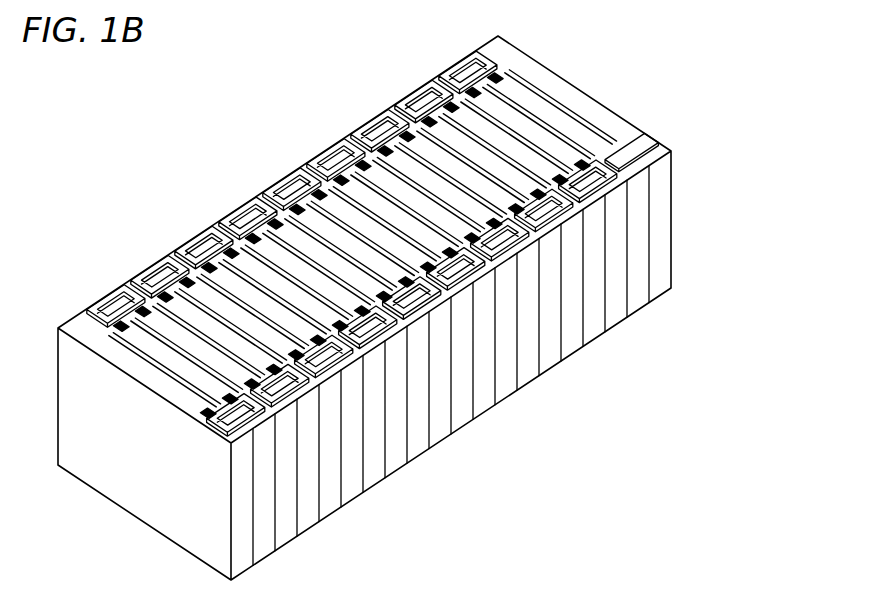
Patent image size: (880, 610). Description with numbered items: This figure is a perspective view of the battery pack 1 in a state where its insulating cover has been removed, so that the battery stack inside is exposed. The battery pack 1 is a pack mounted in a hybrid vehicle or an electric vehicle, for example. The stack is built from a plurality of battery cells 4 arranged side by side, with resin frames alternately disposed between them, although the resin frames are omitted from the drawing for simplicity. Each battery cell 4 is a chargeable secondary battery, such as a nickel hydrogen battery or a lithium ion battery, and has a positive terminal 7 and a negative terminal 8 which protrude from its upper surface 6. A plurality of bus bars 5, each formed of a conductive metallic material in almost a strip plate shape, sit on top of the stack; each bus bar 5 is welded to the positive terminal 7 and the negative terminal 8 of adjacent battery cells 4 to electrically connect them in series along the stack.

The battery pack 1 is at (108, 146).
The battery cell 4 is at (478, 126).
The bus bar 5 is at (478, 61).
The upper surface 6 is at (511, 117).
The positive terminal 7 is at (388, 112).
The negative terminal 8 is at (404, 94).